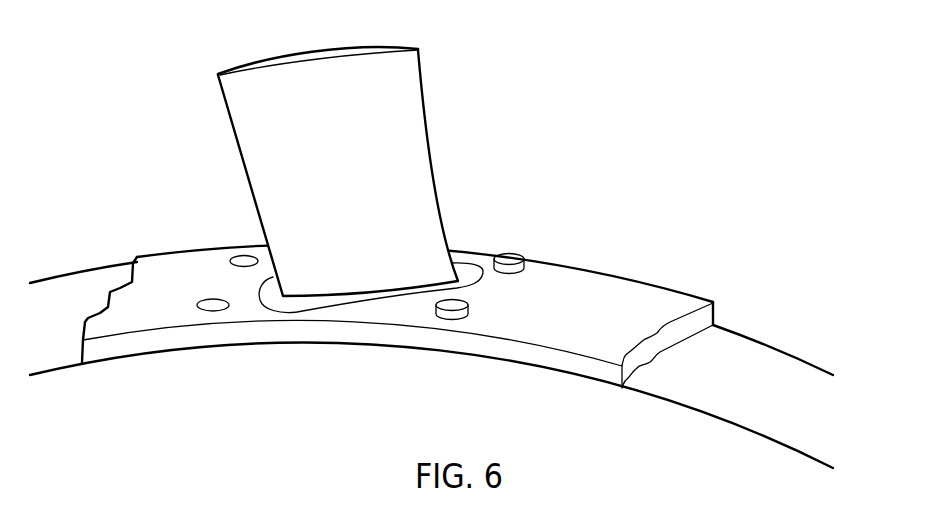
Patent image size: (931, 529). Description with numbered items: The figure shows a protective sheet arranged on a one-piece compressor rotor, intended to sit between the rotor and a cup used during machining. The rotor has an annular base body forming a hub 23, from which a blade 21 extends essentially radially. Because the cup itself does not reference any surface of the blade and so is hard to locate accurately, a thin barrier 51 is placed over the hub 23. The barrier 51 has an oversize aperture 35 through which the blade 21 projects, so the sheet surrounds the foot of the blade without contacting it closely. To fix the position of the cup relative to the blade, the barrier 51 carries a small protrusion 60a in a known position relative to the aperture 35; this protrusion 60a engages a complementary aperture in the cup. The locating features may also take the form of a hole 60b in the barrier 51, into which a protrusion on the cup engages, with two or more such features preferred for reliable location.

The blade 21 is at (405, 124).
The hub 23 is at (772, 358).
The aperture 35 is at (470, 268).
The barrier 51 is at (658, 303).
The protrusion 60a is at (515, 255).
The hole 60b is at (212, 313).